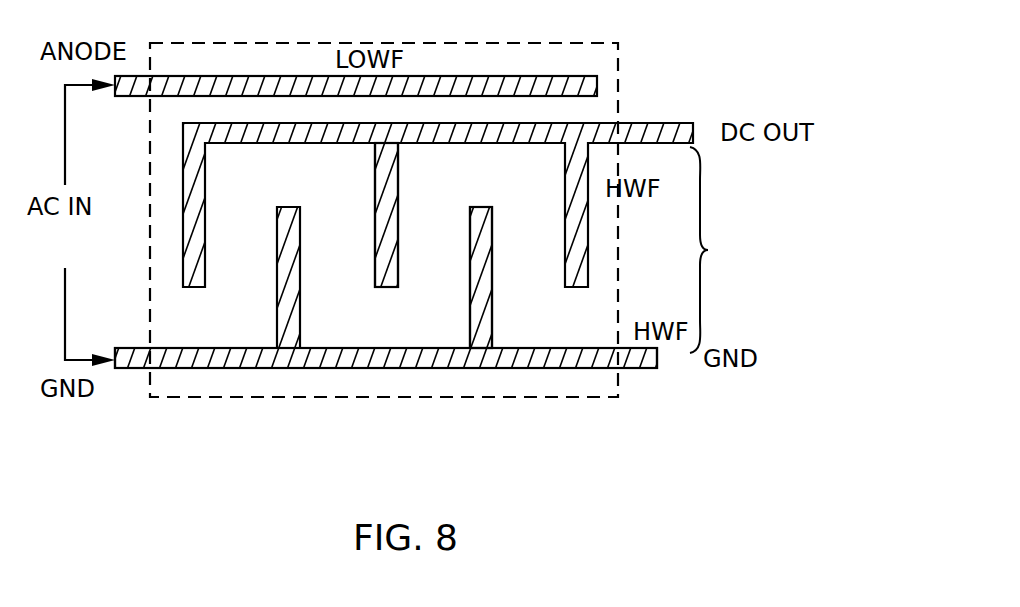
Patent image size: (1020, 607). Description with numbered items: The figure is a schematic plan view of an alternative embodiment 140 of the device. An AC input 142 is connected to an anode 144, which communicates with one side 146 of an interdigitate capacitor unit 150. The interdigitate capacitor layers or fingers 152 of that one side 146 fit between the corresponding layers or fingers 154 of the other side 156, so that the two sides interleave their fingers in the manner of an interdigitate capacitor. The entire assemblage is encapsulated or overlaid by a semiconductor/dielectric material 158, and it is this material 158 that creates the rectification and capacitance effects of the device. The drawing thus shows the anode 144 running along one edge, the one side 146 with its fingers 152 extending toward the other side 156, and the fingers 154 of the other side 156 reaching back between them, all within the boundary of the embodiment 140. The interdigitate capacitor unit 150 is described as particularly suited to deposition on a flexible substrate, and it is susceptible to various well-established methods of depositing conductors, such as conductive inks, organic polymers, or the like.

The alternative embodiment 140 is at (458, 405).
The AC input 142 is at (77, 222).
The anode 144 is at (473, 82).
The one side of interdigitate capacitor unit 146 is at (343, 142).
The interdigitate capacitor unit 150 is at (723, 250).
The interdigitate capacitor layers or fingers 152 is at (387, 277).
The corresponding layers or fingers 154 is at (492, 303).
The other side 156 is at (335, 360).
The semiconductor/dielectric material 158 is at (207, 382).